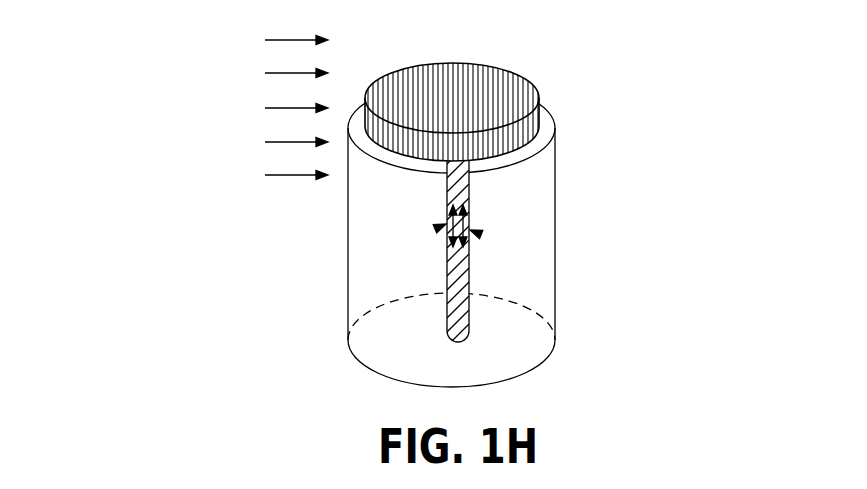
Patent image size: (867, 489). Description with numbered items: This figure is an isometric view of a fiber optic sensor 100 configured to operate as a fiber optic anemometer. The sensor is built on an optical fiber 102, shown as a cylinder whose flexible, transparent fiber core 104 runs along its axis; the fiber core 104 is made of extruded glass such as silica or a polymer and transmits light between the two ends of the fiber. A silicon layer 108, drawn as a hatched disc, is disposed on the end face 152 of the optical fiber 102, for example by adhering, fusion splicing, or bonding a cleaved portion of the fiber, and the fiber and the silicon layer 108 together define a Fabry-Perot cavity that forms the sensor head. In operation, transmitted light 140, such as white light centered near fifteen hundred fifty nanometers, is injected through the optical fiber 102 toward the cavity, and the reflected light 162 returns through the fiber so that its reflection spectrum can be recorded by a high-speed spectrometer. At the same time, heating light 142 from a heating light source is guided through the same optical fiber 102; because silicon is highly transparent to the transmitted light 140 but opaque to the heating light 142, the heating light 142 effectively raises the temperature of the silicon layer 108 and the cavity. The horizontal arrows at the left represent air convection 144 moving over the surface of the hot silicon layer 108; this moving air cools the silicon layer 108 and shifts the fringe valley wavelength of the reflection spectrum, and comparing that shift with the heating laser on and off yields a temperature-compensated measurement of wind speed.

The fiber optic sensor 100 is at (155, 55).
The optical fiber 102 is at (556, 199).
The fiber core 104 is at (440, 300).
The silicon layer 108 is at (507, 73).
The transmitted light 140 is at (478, 233).
The heating light 142 is at (438, 228).
The air convection 144 is at (276, 108).
The end face 152 is at (541, 126).
The reflected light 162 is at (467, 253).